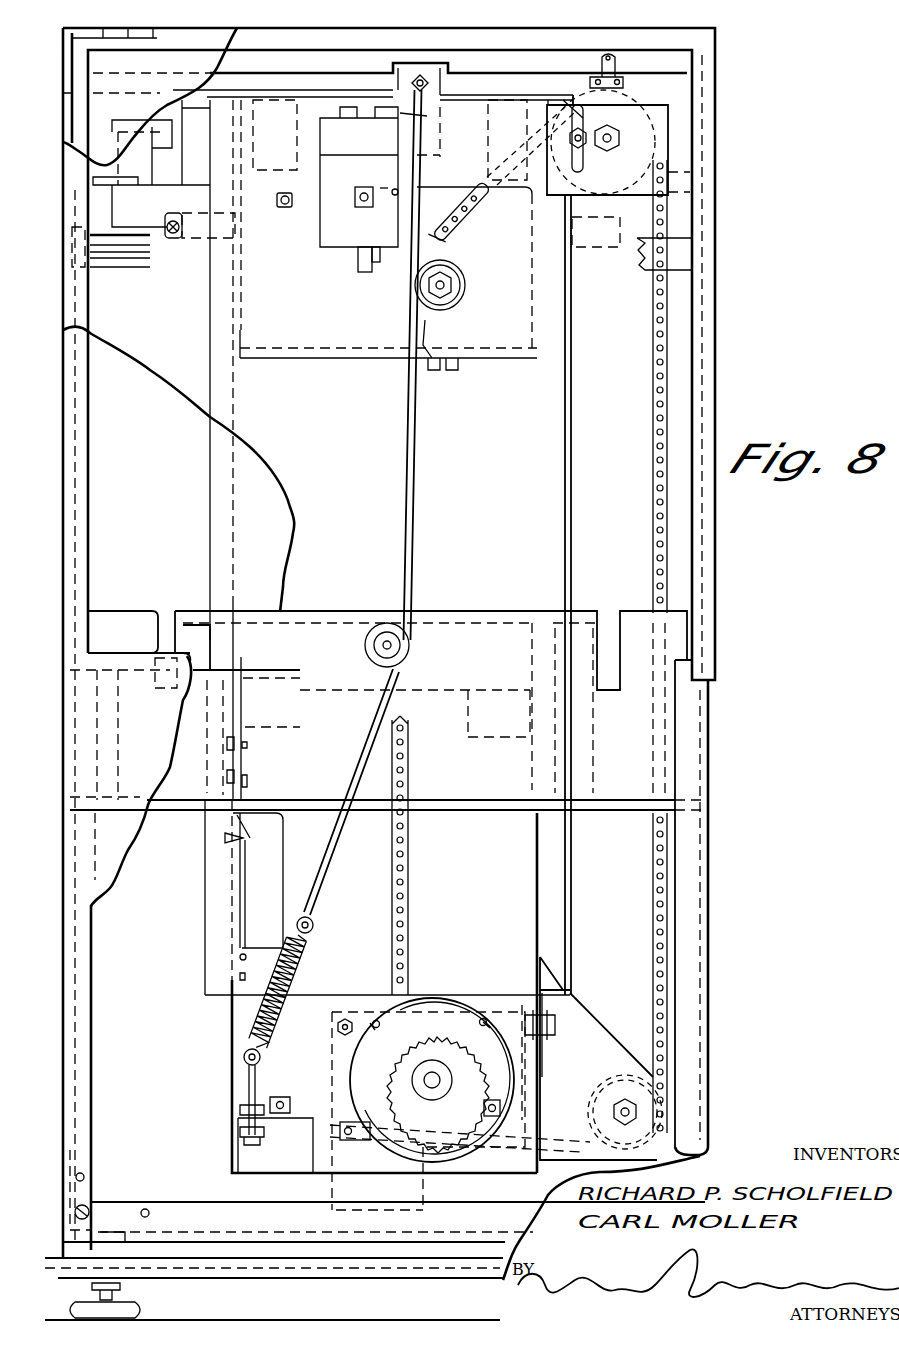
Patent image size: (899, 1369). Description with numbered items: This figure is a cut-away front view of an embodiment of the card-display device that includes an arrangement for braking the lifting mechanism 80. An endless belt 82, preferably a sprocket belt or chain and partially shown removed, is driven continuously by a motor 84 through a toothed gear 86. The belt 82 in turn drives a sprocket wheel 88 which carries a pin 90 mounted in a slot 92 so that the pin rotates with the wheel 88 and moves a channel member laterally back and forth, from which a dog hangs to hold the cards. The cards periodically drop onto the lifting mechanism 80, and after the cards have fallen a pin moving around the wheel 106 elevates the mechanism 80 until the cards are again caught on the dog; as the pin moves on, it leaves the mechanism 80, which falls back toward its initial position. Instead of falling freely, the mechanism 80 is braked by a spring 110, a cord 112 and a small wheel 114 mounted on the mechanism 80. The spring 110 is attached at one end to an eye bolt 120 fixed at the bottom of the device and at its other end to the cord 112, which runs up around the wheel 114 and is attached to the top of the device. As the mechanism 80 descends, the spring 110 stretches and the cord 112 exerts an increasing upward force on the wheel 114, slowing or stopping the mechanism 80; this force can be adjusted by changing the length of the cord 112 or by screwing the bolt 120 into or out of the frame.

The lifting mechanism 80 is at (476, 638).
The endless belt 82 is at (480, 210).
The motor 84 is at (500, 985).
The toothed gear 86 is at (400, 1050).
The sprocket wheel 88 is at (640, 121).
The pin 90 is at (599, 146).
The slot 92 is at (583, 117).
The wheel 106 is at (465, 287).
The spring 110 is at (303, 960).
The cord 112 is at (354, 870).
The small wheel 114 is at (386, 623).
The eye bolt 120 is at (248, 1086).